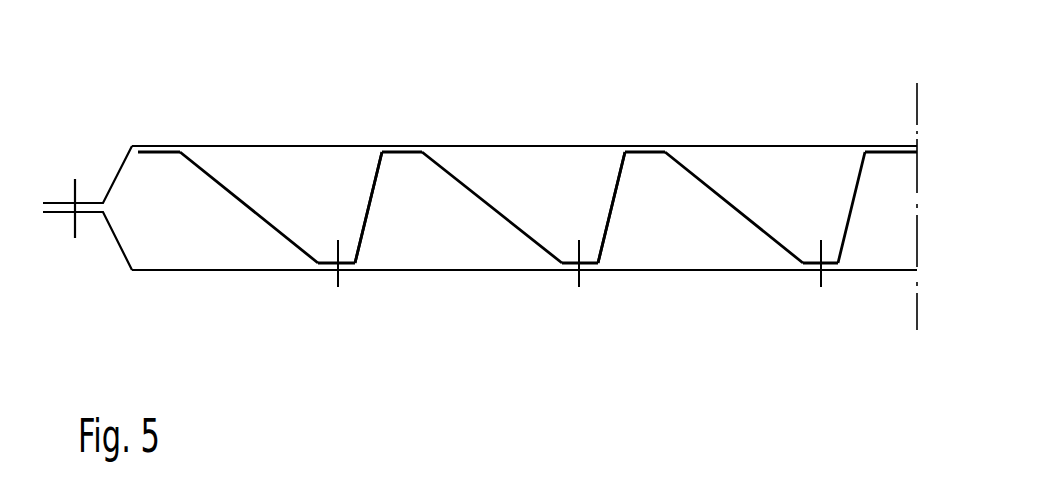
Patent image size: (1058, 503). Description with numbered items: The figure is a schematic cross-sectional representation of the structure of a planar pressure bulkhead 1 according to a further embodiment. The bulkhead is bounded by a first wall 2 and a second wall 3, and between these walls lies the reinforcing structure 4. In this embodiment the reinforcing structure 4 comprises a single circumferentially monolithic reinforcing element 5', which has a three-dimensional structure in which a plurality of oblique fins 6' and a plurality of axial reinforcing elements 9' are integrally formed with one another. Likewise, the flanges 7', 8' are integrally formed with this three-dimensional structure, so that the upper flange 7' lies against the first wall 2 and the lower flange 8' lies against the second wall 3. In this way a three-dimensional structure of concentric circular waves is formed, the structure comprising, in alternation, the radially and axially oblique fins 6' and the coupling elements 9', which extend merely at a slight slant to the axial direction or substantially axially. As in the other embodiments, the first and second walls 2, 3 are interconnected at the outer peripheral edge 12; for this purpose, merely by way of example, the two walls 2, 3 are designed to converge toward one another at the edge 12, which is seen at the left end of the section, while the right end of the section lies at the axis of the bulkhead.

The planar pressure bulkhead 1 is at (502, 173).
The outer peripheral edge 12 is at (75, 142).
The first wall 2 is at (232, 146).
The second wall 3 is at (207, 270).
The reinforcing structure 4 is at (885, 230).
The reinforcing element 5' is at (655, 207).
The oblique fins 6' is at (491, 248).
The flange 7' is at (527, 109).
The flange 8' is at (578, 292).
The axial reinforcing elements 9' is at (490, 173).